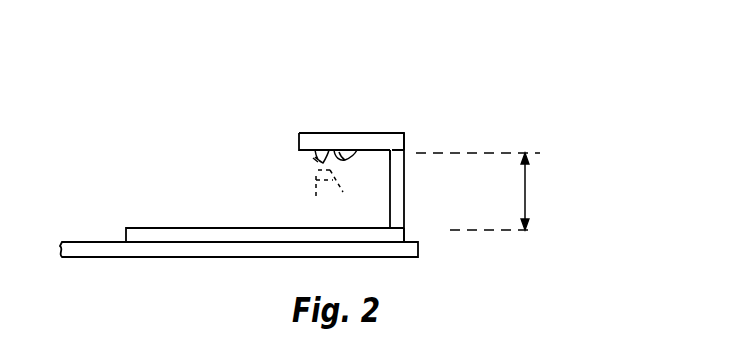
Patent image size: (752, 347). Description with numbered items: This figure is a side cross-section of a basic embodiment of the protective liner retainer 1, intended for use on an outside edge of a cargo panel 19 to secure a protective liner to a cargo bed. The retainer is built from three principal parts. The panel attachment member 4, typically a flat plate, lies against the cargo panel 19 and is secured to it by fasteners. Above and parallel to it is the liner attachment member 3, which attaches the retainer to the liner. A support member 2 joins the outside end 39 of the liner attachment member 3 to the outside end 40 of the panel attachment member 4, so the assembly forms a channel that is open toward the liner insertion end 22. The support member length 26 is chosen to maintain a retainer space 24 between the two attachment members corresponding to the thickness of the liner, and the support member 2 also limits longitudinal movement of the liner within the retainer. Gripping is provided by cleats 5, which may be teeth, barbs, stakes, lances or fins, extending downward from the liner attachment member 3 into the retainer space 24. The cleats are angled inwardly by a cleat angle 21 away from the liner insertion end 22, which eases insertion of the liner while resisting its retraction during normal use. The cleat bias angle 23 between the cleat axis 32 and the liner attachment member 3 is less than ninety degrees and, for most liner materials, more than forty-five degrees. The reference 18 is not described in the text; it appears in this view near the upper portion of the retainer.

The protective liner retainer 1 is at (233, 238).
The support member 2 is at (402, 188).
The liner attachment member 3 is at (337, 134).
The panel attachment member 4 is at (145, 233).
The cleat 5 is at (313, 158).
The top portion 18 is at (390, 133).
The cargo panel 19 is at (390, 257).
The cleat angle 21 is at (318, 172).
The liner insertion end 22 is at (313, 158).
The cleat bias angle 23 is at (328, 160).
The retainer space 24 is at (525, 193).
The support member length 26 is at (478, 191).
The cleat axis 32 is at (333, 190).
The outside end of the liner attachment member 39 is at (398, 143).
The outside end of the panel attachment member 40 is at (405, 230).